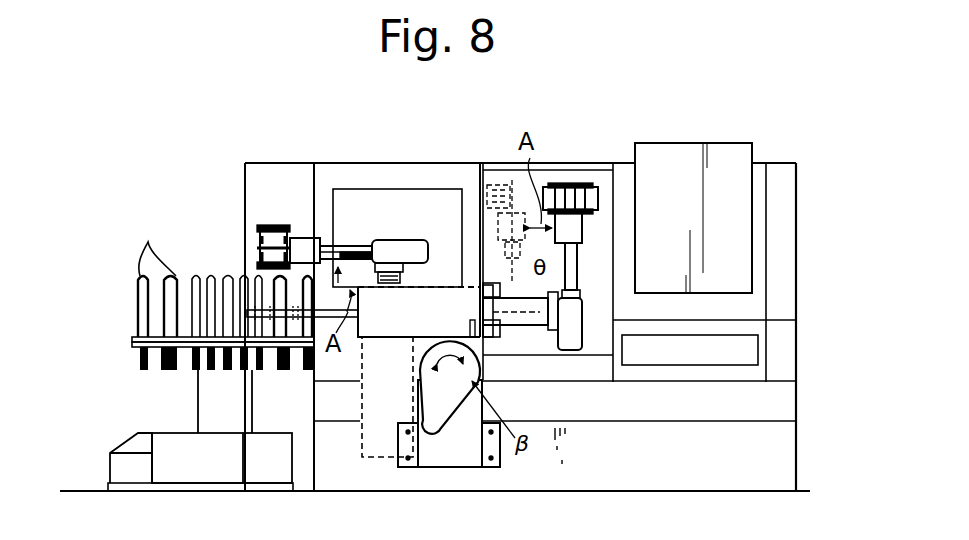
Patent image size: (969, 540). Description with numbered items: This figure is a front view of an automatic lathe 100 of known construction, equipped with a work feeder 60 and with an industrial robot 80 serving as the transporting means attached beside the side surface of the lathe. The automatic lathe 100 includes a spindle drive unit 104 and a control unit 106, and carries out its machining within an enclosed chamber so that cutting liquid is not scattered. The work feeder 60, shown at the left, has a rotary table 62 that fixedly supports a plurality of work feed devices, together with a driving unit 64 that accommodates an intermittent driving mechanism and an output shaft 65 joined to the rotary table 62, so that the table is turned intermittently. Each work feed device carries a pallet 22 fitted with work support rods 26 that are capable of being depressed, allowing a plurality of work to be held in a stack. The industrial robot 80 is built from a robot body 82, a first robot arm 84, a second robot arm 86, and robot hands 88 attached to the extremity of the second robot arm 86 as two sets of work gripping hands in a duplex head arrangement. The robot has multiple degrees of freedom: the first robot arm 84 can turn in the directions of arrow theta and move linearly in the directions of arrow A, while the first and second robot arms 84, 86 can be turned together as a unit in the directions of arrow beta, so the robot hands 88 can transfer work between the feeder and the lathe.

The pallet 22 is at (137, 338).
The work support rods 26 is at (148, 248).
The work feeder 60 is at (195, 404).
The rotary table 62 is at (133, 346).
The driving unit 64 is at (153, 447).
The output shaft 65 is at (228, 423).
The industrial robot 80 is at (383, 347).
The robot body 82 is at (438, 420).
The first robot arm 84 is at (506, 324).
The second robot arm 86 is at (578, 262).
The robot hands 88 is at (262, 232).
The automatic lathe 100 is at (437, 162).
The spindle drive unit 104 is at (353, 163).
The control unit 106 is at (740, 241).